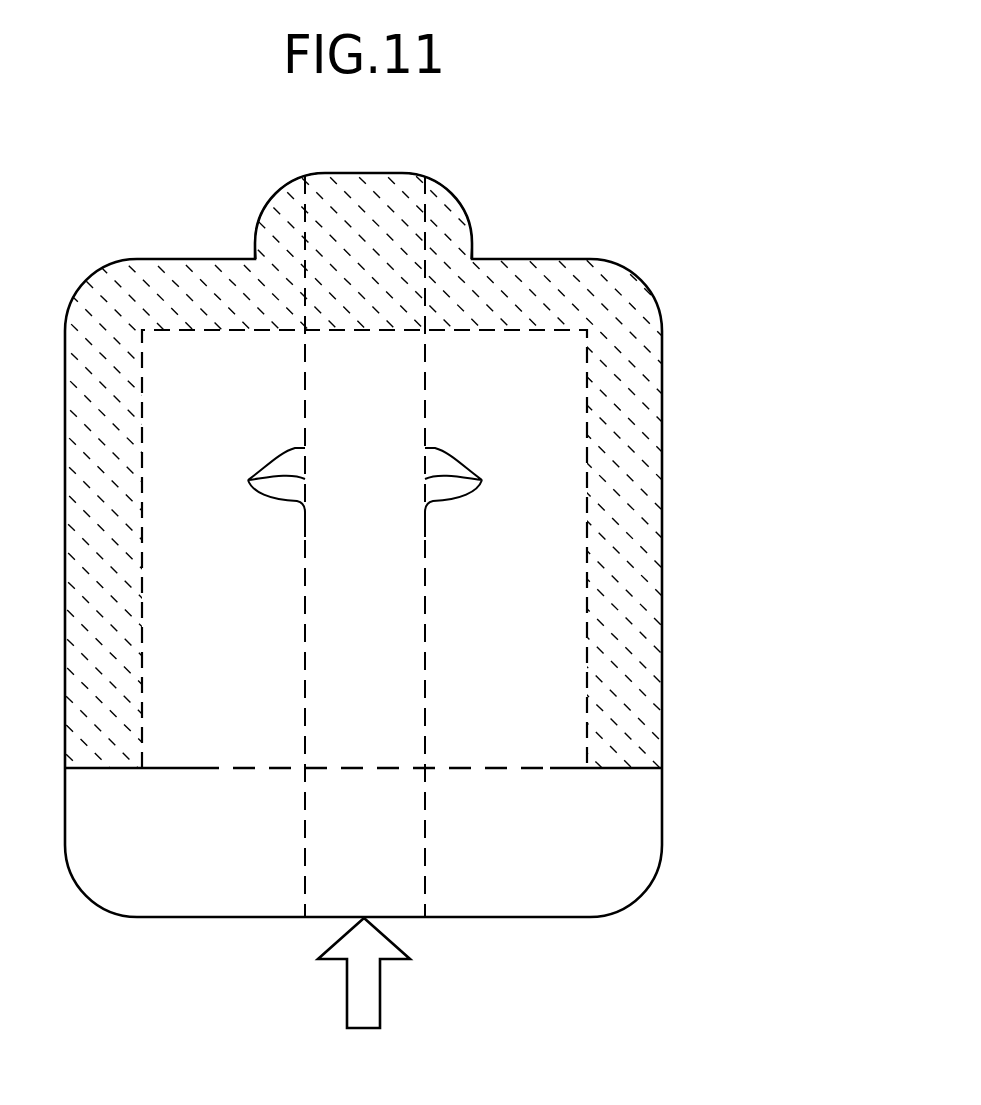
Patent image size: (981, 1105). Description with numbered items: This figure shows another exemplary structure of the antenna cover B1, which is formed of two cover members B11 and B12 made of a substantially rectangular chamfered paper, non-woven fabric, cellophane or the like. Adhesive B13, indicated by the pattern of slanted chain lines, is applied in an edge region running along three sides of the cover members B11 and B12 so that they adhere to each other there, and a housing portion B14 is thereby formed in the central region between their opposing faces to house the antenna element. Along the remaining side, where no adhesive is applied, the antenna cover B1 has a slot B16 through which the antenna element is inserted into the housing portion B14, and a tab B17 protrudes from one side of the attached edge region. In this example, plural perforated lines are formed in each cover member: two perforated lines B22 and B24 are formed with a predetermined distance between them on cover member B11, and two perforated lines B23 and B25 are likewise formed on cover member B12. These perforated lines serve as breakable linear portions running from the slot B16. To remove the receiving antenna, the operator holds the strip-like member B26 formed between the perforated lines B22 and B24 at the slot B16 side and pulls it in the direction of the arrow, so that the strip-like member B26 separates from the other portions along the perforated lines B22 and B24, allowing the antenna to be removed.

The antenna cover B1 is at (438, 583).
The cover member B11 is at (438, 538).
The cover member B12 is at (438, 538).
The adhesive B13 is at (657, 393).
The housing portion B14 is at (570, 543).
The slot B16 is at (522, 918).
The tab B17 is at (437, 184).
The perforated line B22 is at (240, 480).
The perforated line B23 is at (240, 480).
The perforated line B24 is at (493, 480).
The perforated line B25 is at (493, 480).
The strip-like member B26 is at (398, 708).